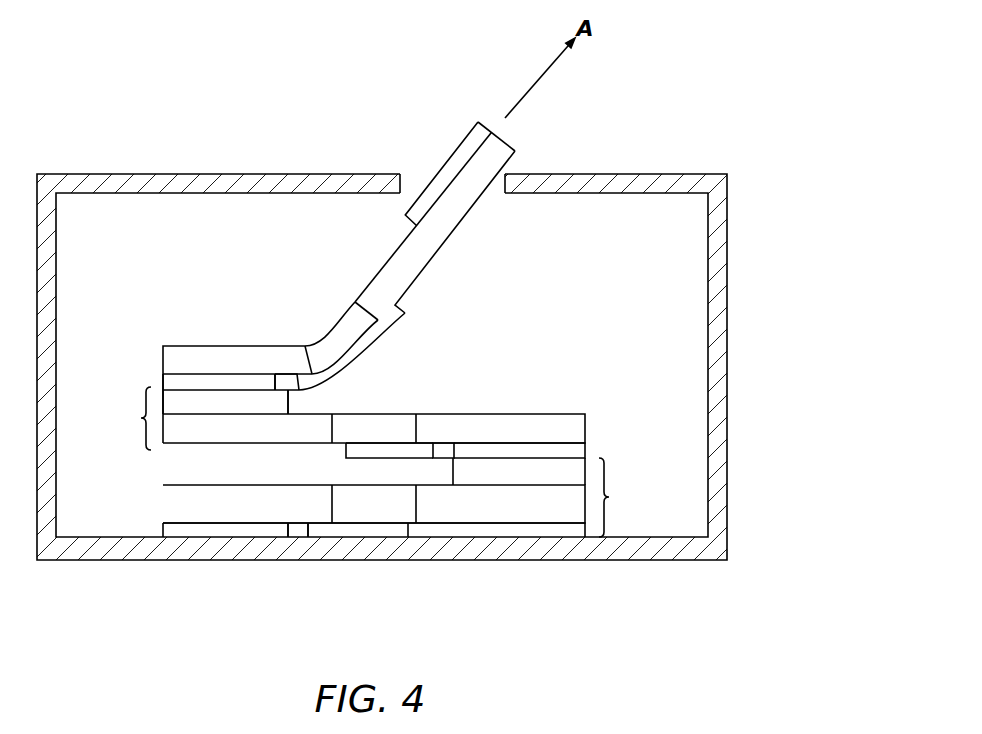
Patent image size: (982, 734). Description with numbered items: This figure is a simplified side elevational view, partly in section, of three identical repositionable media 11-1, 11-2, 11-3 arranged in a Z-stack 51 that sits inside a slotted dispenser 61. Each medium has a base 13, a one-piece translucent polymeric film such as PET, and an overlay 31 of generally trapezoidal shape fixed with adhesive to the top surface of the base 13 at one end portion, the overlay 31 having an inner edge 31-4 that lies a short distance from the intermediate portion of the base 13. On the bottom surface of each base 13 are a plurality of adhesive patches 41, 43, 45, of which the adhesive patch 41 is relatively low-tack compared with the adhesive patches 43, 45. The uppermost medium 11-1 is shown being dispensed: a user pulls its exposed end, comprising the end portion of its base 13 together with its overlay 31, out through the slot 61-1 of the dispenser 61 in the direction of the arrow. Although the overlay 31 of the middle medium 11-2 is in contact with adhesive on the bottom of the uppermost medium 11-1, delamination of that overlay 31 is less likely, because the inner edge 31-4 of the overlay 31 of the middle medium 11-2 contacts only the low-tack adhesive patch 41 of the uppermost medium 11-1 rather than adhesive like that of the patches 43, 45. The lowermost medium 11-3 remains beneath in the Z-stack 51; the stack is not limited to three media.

The uppermost medium 11-1 is at (450, 258).
The middle medium 11-2 is at (128, 414).
The lowermost medium 11-3 is at (623, 495).
The base 13 is at (517, 170).
The overlay 31 is at (465, 138).
The inner edge 31-4 is at (288, 402).
The adhesive patch 41 is at (282, 382).
The adhesive patch 43 is at (221, 384).
The adhesive patch 45 is at (368, 343).
The Z-stack 51 is at (257, 322).
The slotted dispenser 61 is at (735, 235).
The slot 61-1 is at (415, 185).